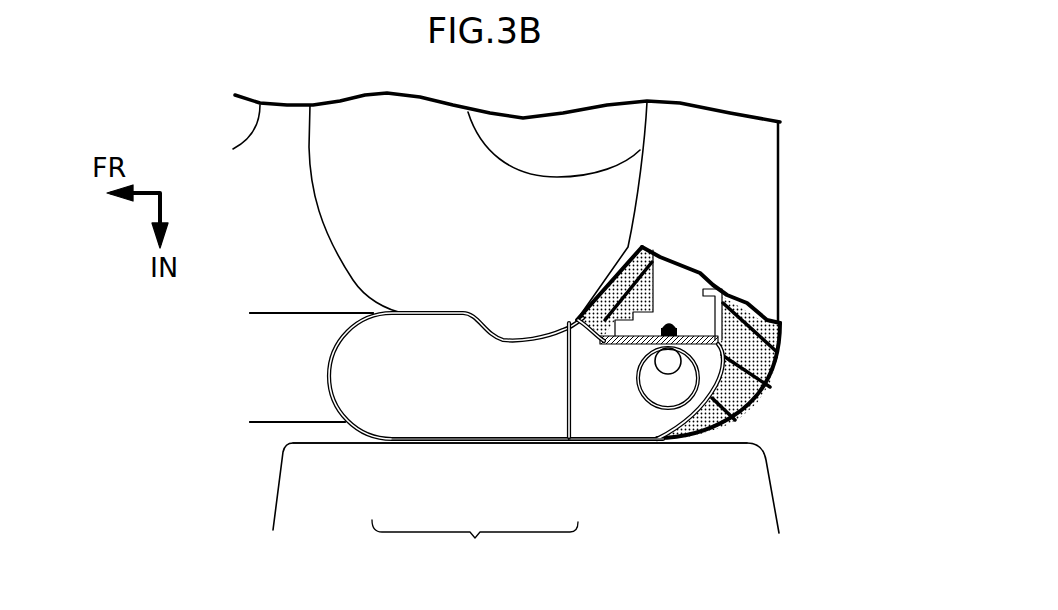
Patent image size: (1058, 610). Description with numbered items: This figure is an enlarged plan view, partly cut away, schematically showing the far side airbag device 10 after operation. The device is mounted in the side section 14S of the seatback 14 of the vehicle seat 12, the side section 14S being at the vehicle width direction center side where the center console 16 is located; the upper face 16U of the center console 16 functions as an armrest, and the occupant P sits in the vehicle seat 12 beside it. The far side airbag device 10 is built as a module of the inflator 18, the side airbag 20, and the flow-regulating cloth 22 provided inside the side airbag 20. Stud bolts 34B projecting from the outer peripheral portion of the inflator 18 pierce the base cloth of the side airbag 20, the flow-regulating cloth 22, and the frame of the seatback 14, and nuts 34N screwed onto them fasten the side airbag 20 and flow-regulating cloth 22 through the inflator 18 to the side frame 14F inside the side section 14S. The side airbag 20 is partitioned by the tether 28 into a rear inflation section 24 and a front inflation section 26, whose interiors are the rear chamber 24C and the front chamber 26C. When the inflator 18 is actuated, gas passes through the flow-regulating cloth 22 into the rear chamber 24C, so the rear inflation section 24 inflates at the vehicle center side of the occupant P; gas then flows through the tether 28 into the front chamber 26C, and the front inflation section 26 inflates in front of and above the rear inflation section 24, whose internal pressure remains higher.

The occupant P is at (338, 206).
The far side airbag device 10 is at (272, 371).
The vehicle seat 12 is at (265, 431).
The seatback 14 is at (786, 276).
The side frame 14F is at (712, 289).
The side section 14S is at (698, 440).
The center console 16 is at (778, 471).
The upper face 16U is at (758, 513).
The inflator 18 is at (670, 363).
The side airbag 20 is at (475, 548).
The flow-regulating cloth 22 is at (637, 372).
The rear inflation section 24 is at (665, 443).
The rear chamber 24C is at (630, 426).
The front inflation section 26 is at (350, 443).
The front chamber 26C is at (438, 394).
The tether 28 is at (567, 387).
The stud bolt 34B is at (666, 327).
The nut 34N is at (679, 323).